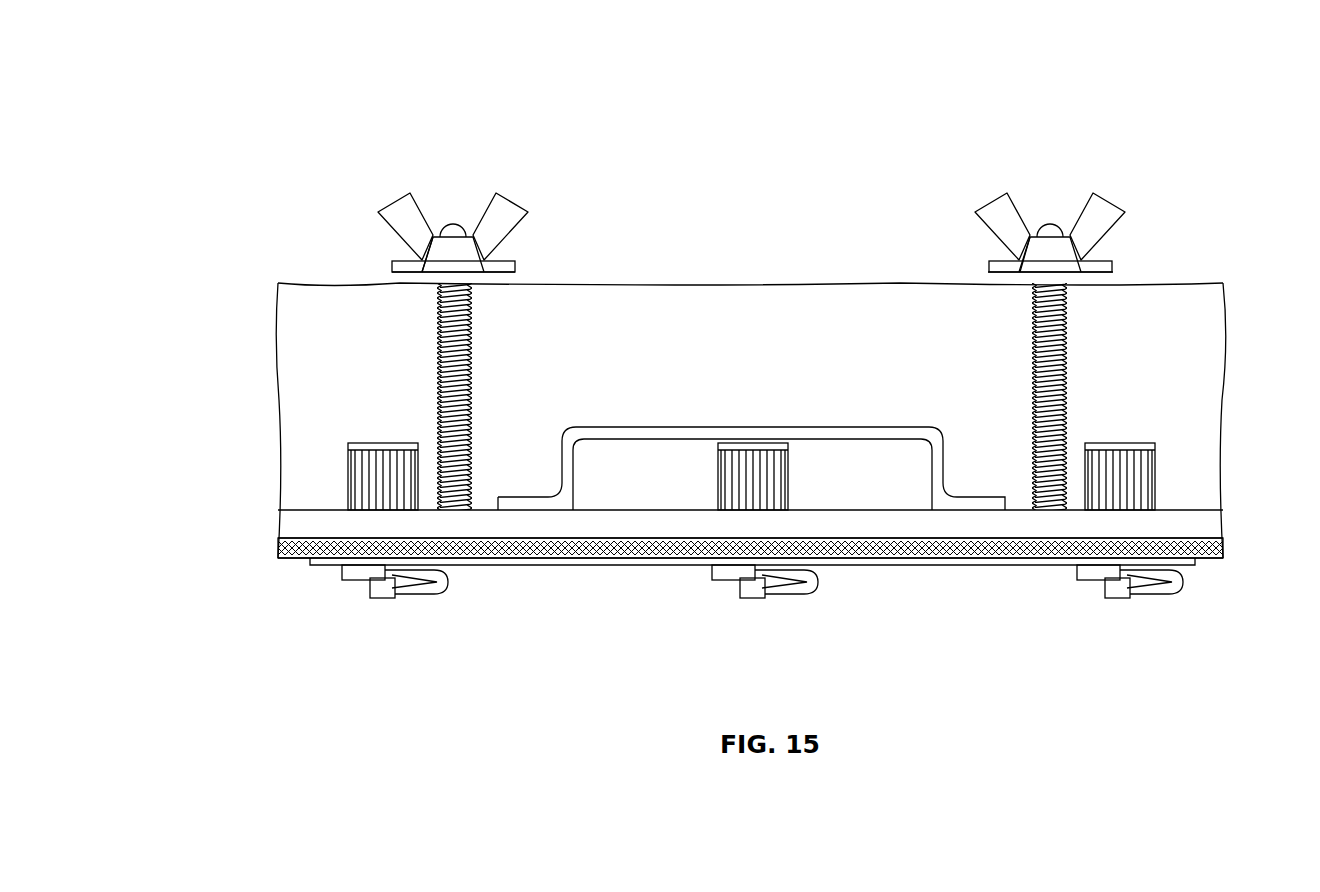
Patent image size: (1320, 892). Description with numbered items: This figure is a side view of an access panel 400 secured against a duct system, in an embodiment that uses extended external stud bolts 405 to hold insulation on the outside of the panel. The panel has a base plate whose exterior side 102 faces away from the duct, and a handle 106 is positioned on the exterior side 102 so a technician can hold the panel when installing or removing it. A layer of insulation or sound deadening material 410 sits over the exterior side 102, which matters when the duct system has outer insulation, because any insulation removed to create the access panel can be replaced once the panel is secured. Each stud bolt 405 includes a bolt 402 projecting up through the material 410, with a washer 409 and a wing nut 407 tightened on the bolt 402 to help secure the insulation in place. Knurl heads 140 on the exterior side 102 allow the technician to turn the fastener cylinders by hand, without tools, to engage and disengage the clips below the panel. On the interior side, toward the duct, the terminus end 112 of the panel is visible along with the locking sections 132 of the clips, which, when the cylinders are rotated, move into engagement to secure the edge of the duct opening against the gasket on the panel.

The access panel 400 is at (258, 100).
The exterior side 102 is at (920, 527).
The handle 106 is at (826, 426).
The terminus end 112 is at (530, 558).
The locking section 132 is at (412, 603).
The knurl head 140 is at (360, 483).
The bolt 402 is at (1072, 372).
The stud bolt 405 is at (1108, 190).
The wing nut 407 is at (505, 212).
The washer 409 is at (519, 281).
The insulation or sound deadening material 410 is at (637, 303).